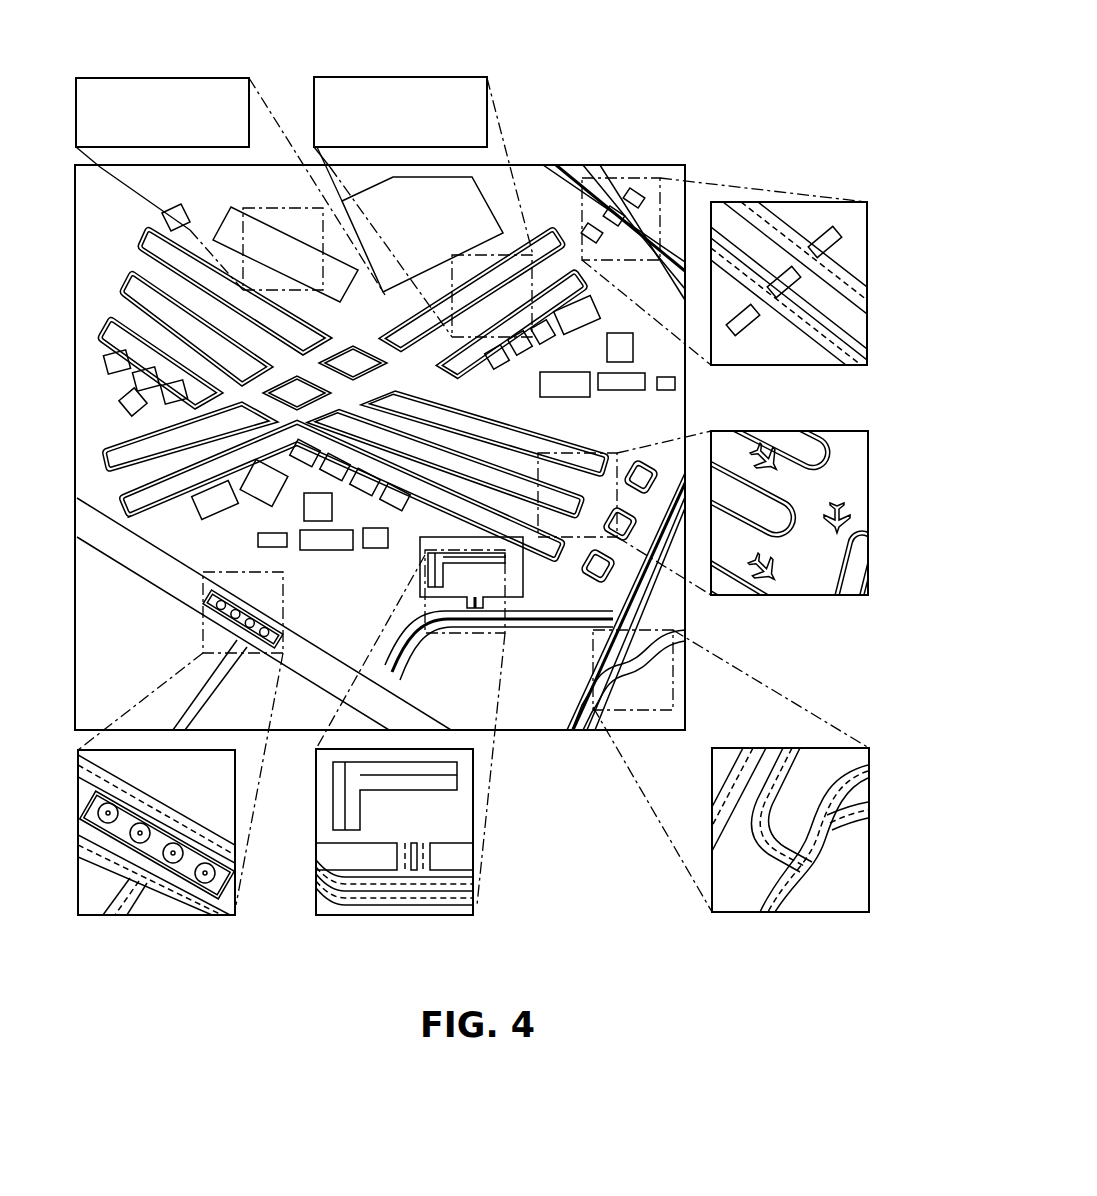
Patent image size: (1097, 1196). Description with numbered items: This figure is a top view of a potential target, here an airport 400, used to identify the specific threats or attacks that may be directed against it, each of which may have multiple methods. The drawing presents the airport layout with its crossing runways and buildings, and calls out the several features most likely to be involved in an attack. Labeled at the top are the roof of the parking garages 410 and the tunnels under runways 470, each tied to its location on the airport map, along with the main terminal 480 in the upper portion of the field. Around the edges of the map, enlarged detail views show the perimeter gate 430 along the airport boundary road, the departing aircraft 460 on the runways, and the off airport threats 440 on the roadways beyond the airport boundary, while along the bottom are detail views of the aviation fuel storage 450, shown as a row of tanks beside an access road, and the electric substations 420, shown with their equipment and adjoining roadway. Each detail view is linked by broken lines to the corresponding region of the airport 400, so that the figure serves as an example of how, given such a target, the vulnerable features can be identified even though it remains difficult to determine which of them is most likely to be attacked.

The airport 400 is at (778, 70).
The parking garages 410 is at (163, 78).
The electric substations 420 is at (316, 834).
The perimeter gate 430 is at (868, 284).
The off airport threats 440 is at (870, 830).
The aviation fuel storage 450 is at (78, 834).
The departing aircraft 460 is at (869, 514).
The tunnels under runways 470 is at (402, 77).
The main terminal 480 is at (507, 165).